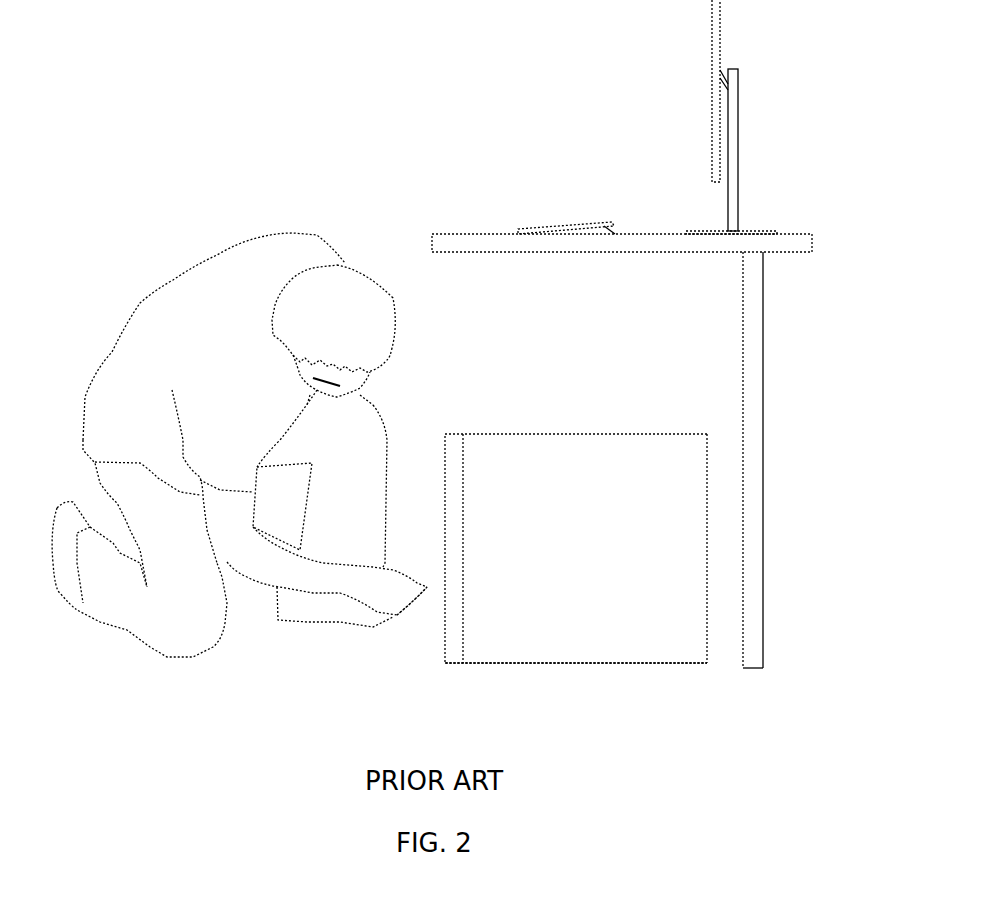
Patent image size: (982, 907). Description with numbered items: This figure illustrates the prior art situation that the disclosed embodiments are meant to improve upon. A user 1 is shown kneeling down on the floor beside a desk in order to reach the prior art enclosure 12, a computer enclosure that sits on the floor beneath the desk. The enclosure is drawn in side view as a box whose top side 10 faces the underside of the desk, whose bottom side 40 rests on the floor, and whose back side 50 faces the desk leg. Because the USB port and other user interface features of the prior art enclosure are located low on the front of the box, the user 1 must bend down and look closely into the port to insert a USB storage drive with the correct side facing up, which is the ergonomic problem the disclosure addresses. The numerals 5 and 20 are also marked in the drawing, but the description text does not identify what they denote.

The user 1 is at (190, 308).
The cable connector 5 is at (422, 600).
The top side 10 is at (665, 422).
The prior art enclosure 12 is at (639, 588).
The computer chassis interior 20 is at (518, 590).
The bottom side 40 is at (643, 678).
The back side 50 is at (718, 495).